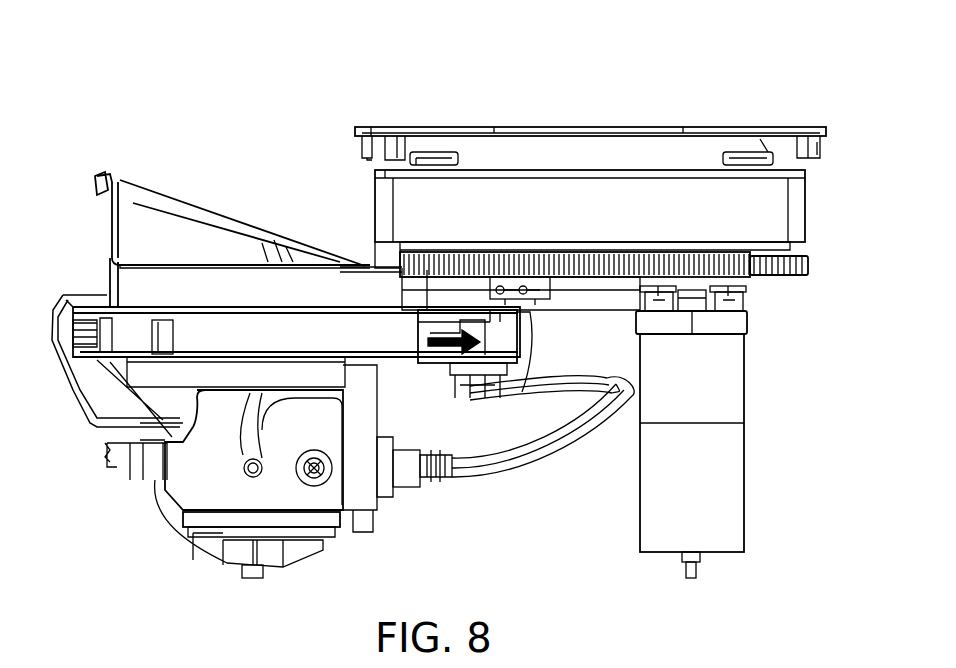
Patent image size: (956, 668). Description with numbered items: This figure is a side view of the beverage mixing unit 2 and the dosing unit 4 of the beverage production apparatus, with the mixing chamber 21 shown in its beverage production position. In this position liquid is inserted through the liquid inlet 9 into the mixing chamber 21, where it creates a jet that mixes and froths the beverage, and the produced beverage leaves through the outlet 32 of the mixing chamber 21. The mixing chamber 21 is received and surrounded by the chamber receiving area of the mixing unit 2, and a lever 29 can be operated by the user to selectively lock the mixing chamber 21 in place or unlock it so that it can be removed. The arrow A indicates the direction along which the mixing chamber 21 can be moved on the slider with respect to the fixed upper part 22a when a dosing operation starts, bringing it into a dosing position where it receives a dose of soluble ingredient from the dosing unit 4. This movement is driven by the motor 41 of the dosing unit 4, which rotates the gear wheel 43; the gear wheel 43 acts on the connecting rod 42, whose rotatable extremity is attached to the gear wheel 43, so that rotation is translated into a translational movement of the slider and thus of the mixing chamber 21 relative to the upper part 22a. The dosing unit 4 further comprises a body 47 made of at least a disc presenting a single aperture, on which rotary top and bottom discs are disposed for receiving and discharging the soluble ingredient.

The beverage mixing unit 2 is at (156, 170).
The fixed upper part 22a is at (213, 226).
The dosing unit 4 is at (738, 108).
The body 47 is at (808, 216).
The gear wheel 43 is at (812, 268).
The connecting rod 42 is at (512, 340).
The arrow A is at (440, 352).
The motor 41 is at (735, 388).
The liquid inlet 9 is at (435, 480).
The lever 29 is at (178, 490).
The mixing chamber 21 is at (285, 530).
The outlet 32 is at (250, 580).